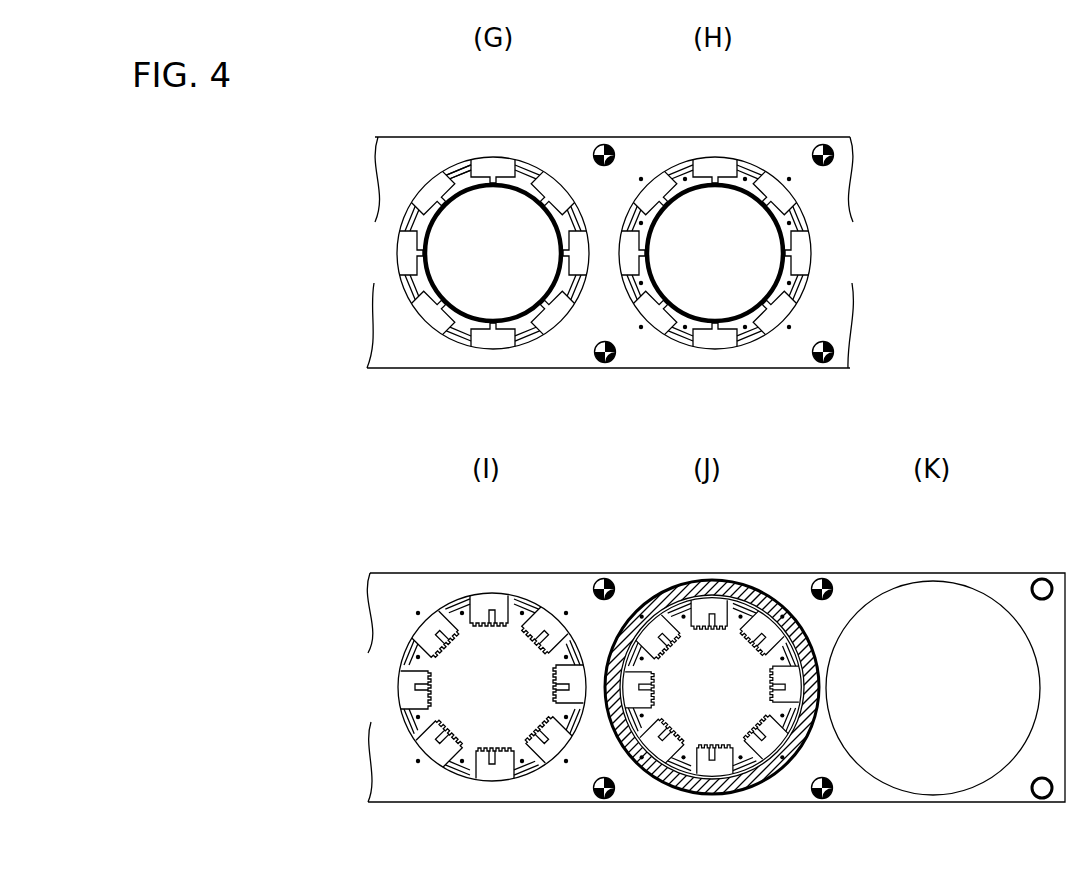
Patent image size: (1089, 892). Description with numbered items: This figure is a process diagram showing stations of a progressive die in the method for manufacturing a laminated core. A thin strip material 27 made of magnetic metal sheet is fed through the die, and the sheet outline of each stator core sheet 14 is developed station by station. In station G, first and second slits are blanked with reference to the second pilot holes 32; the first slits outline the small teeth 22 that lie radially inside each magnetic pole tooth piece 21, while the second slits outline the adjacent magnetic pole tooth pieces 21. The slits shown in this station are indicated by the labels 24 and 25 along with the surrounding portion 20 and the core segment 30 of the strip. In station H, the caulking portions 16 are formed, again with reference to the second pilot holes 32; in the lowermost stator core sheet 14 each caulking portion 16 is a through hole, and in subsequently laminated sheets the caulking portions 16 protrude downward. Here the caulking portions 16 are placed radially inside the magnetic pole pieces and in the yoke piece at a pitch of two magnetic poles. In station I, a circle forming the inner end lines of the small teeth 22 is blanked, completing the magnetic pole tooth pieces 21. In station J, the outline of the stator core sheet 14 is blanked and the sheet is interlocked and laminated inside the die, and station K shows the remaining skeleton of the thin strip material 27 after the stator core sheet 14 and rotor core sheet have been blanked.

The stator core sheet 14 is at (763, 597).
The caulking portion 16 is at (684, 178).
The yoke ring 20 is at (410, 208).
The magnetic pole tooth piece 21 is at (465, 180).
The small teeth 22 is at (488, 748).
The pole piece 24 is at (525, 136).
The pole piece 25 is at (528, 158).
The thin strip material 27 is at (681, 368).
The core segment 30 is at (410, 242).
The second pilot hole 32 is at (604, 144).